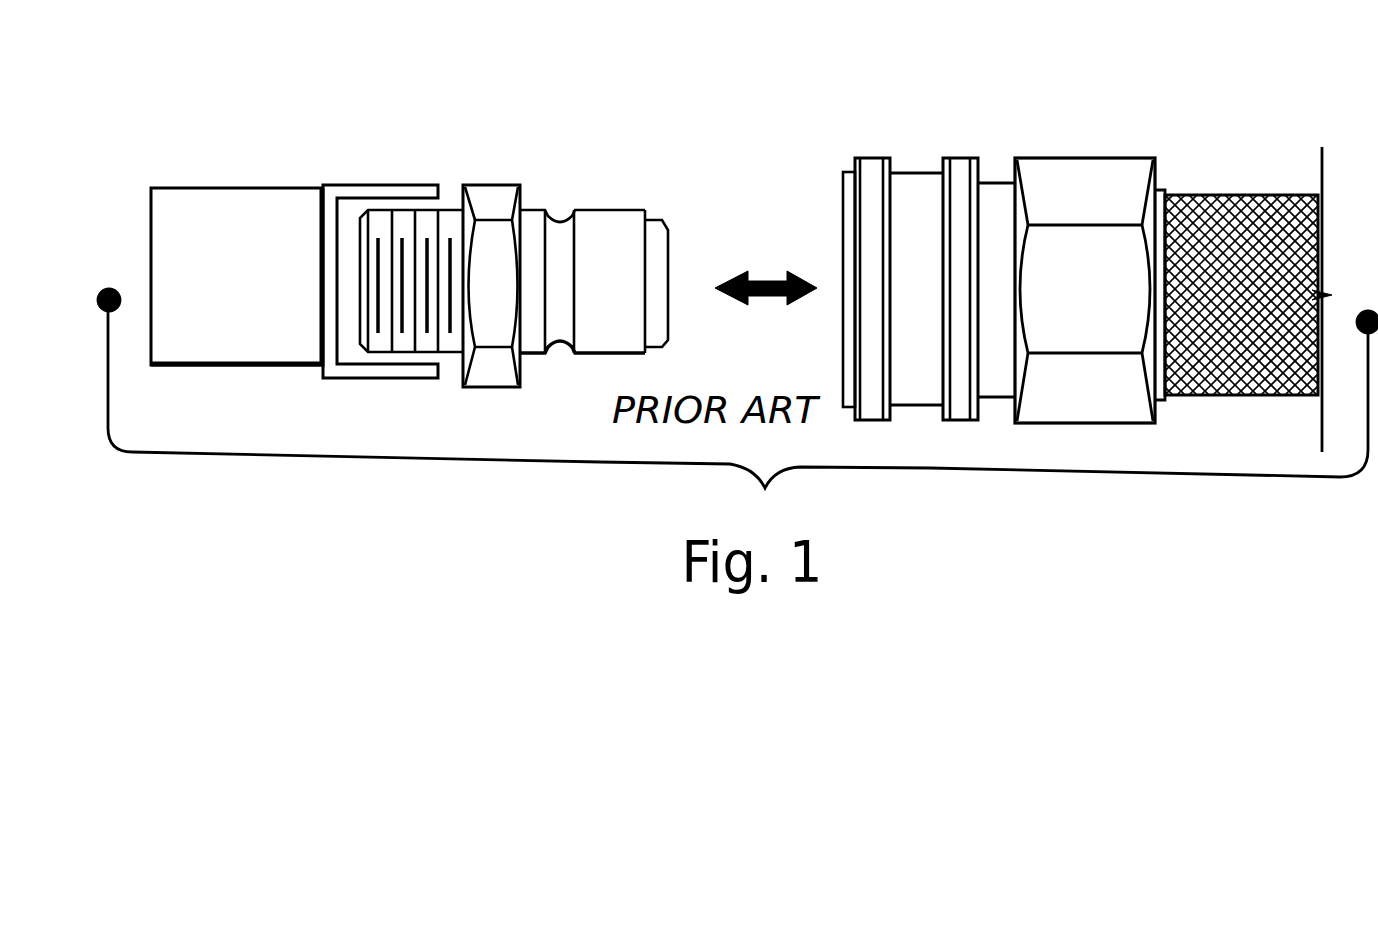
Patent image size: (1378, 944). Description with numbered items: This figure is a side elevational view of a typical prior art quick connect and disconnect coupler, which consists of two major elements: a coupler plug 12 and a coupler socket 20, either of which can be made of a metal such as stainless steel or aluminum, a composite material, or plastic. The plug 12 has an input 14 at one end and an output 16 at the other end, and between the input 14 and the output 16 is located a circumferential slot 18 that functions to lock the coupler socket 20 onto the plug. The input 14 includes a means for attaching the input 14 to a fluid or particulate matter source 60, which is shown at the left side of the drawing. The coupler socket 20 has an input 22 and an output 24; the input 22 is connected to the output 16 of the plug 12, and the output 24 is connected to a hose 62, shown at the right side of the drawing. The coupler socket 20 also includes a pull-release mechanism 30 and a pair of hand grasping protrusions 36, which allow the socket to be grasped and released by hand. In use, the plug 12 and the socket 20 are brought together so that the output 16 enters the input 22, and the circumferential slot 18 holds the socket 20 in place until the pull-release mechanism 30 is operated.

The coupler plug 12 is at (523, 165).
The input 14 is at (323, 185).
The output 16 is at (675, 243).
The circumferential slot 18 is at (563, 213).
The coupler socket 20 is at (1042, 148).
The input 22 is at (841, 243).
The output 24 is at (1020, 192).
The pull-release mechanism 30 is at (907, 223).
The hand grasping protrusions 36 is at (873, 170).
The fluid or particulate matter source 60 is at (236, 276).
The hose 62 is at (1267, 197).